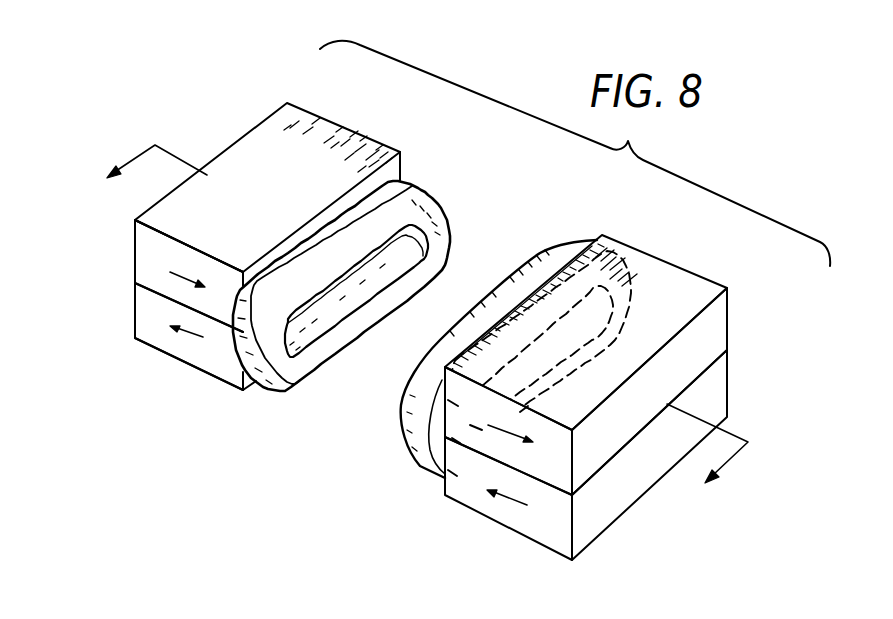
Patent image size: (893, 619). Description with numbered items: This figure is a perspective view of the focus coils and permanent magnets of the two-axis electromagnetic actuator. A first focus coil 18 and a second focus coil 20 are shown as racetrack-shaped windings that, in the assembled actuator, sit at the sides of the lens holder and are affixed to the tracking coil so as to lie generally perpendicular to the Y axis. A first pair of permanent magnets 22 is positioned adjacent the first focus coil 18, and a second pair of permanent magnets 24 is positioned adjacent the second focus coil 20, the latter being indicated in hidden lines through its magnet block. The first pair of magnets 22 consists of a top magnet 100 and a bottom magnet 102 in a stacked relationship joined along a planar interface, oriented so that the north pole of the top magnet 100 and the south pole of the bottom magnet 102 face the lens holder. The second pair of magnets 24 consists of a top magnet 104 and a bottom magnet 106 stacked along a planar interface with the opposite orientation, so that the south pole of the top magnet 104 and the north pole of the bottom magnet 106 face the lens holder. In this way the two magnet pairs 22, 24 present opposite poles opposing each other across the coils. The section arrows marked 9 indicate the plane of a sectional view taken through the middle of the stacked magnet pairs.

The section line 9- 9 is at (416, 330).
The first focus coil 18 is at (440, 204).
The second focus coil 20 is at (401, 403).
The first pair of permanent magnets 22 is at (252, 170).
The second pair of permanent magnets 24 is at (640, 260).
The top magnet 100 is at (140, 246).
The bottom magnet 102 is at (137, 300).
The top magnet 104 is at (713, 323).
The bottom magnet 106 is at (717, 385).